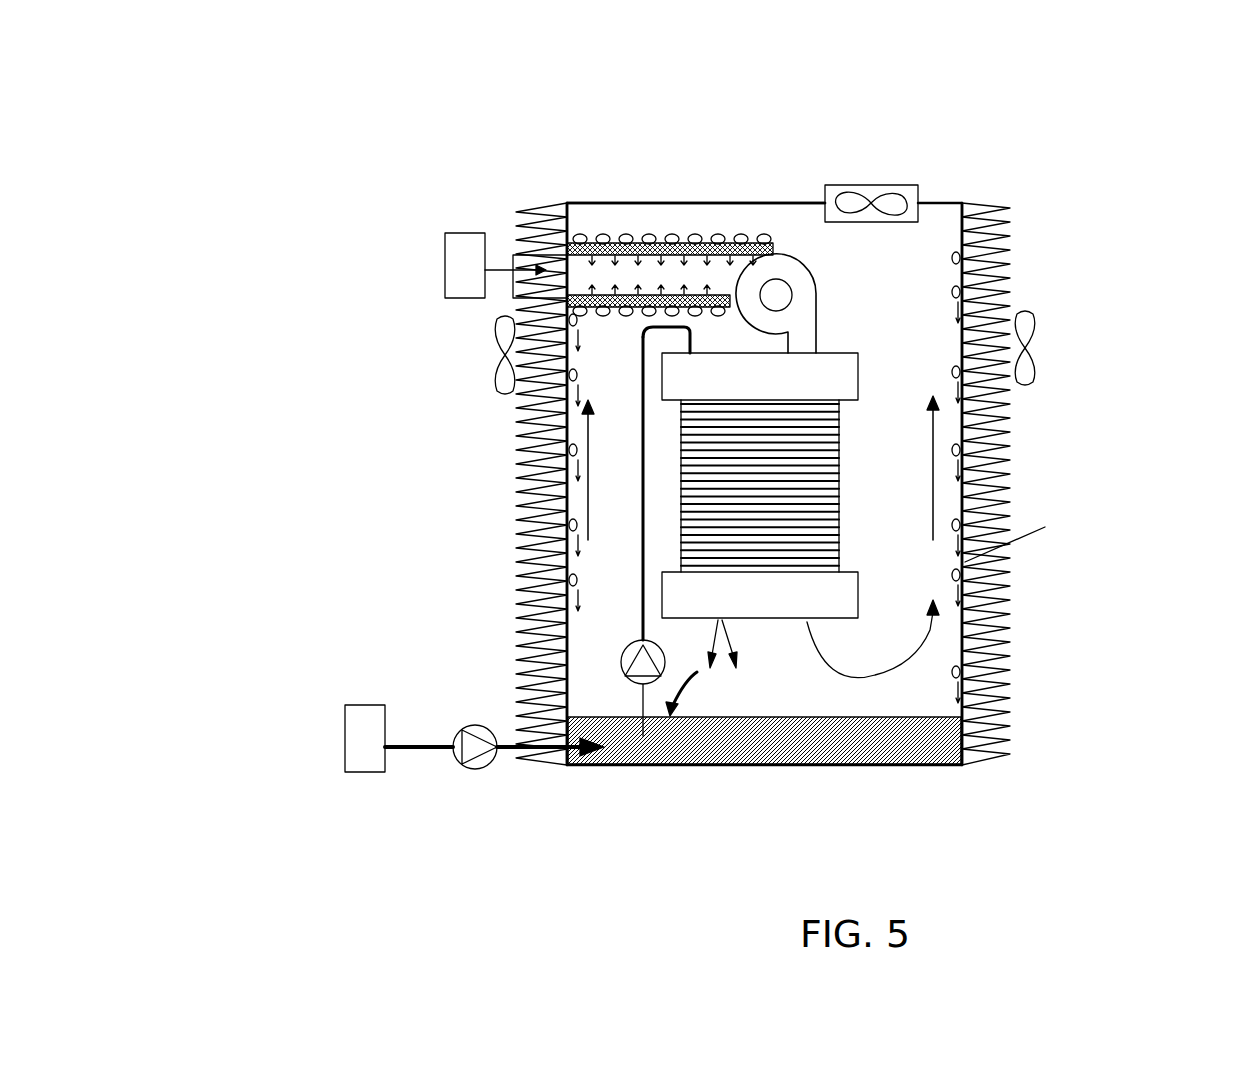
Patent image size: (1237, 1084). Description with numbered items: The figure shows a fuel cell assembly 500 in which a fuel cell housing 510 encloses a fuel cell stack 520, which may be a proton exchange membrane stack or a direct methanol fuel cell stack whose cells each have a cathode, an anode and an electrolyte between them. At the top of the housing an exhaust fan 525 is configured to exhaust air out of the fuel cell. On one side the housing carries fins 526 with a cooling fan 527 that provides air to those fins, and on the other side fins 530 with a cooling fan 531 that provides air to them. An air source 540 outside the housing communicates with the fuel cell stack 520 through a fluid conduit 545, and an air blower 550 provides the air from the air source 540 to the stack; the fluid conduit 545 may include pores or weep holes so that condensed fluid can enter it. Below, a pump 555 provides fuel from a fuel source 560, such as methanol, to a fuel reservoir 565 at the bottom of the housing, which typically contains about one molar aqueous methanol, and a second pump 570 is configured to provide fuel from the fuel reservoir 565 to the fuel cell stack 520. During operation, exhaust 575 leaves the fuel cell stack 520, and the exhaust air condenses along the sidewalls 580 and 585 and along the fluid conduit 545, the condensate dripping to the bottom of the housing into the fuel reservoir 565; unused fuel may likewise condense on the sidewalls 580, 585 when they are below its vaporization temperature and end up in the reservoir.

The fuel cell assembly 500 is at (760, 152).
The fuel cell housing 510 is at (640, 204).
The fuel cell stack 520 is at (780, 592).
The exhaust fan 525 is at (871, 203).
The fins 526 is at (1003, 436).
The cooling fan 527 is at (1028, 330).
The fins 530 is at (520, 515).
The cooling fan 531 is at (500, 340).
The air source 540 is at (455, 233).
The fluid conduit 545 is at (563, 275).
The air blower 550 is at (800, 310).
The pump 555 is at (462, 768).
The fuel source 560 is at (358, 732).
The fuel reservoir 565 is at (884, 748).
The pump 570 is at (620, 660).
The exhaust 575 is at (930, 642).
The sidewall 580 is at (520, 447).
The sidewall 585 is at (1005, 272).